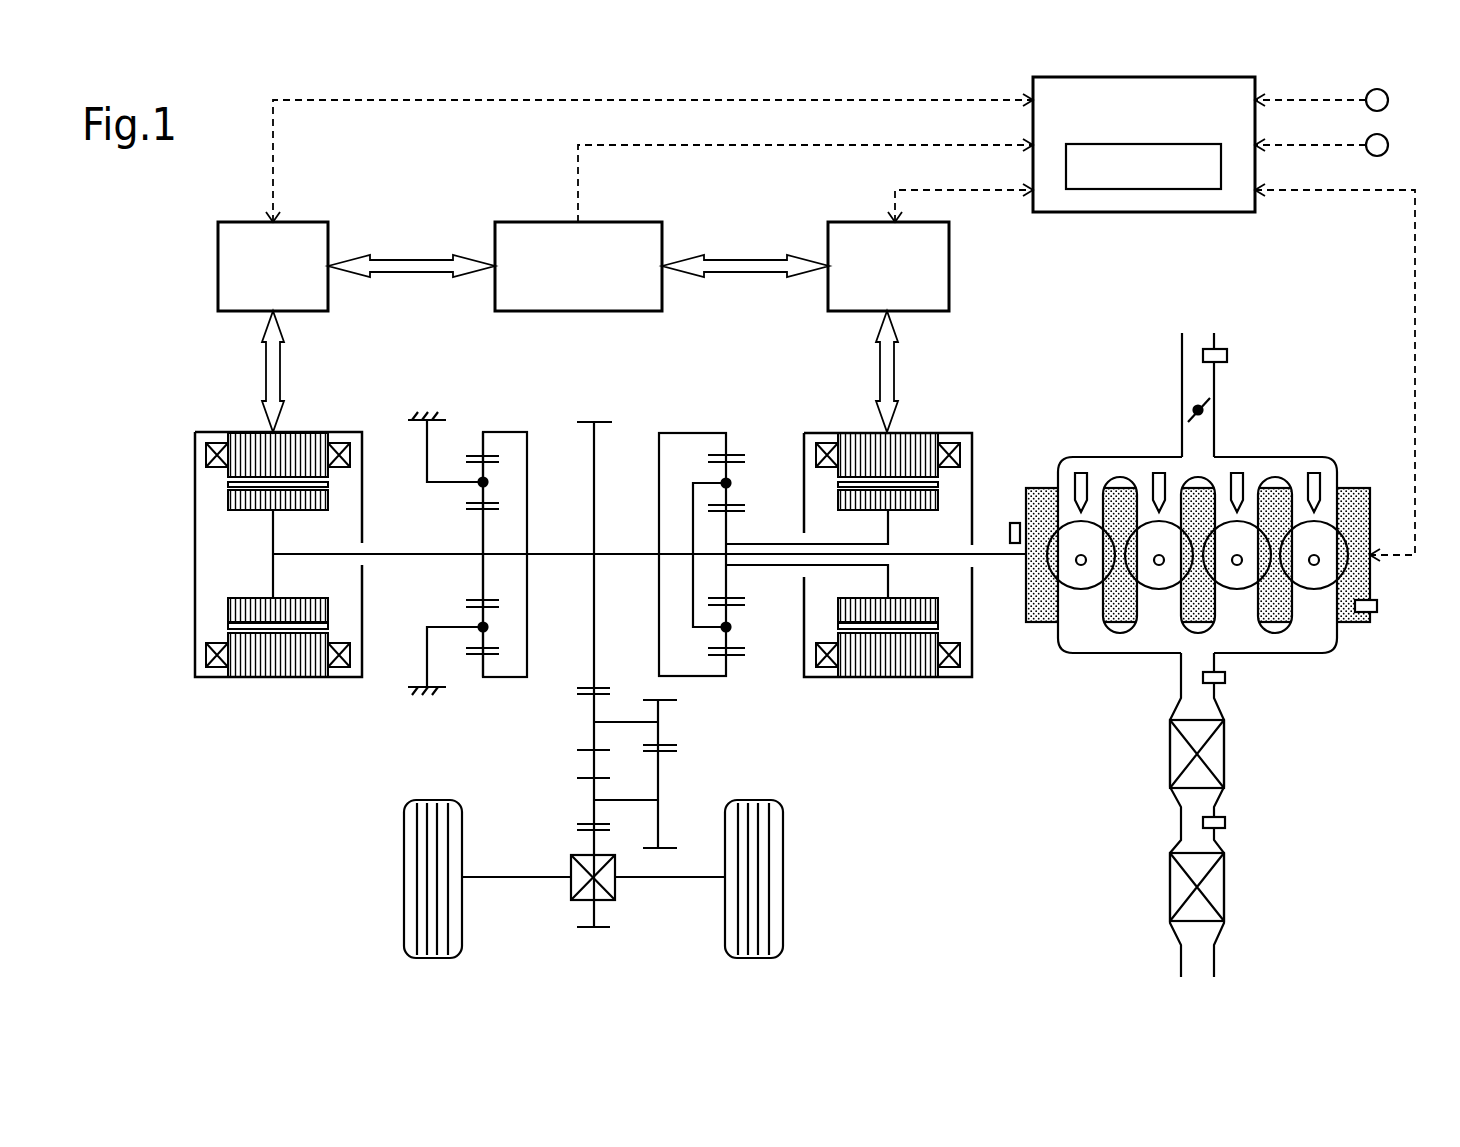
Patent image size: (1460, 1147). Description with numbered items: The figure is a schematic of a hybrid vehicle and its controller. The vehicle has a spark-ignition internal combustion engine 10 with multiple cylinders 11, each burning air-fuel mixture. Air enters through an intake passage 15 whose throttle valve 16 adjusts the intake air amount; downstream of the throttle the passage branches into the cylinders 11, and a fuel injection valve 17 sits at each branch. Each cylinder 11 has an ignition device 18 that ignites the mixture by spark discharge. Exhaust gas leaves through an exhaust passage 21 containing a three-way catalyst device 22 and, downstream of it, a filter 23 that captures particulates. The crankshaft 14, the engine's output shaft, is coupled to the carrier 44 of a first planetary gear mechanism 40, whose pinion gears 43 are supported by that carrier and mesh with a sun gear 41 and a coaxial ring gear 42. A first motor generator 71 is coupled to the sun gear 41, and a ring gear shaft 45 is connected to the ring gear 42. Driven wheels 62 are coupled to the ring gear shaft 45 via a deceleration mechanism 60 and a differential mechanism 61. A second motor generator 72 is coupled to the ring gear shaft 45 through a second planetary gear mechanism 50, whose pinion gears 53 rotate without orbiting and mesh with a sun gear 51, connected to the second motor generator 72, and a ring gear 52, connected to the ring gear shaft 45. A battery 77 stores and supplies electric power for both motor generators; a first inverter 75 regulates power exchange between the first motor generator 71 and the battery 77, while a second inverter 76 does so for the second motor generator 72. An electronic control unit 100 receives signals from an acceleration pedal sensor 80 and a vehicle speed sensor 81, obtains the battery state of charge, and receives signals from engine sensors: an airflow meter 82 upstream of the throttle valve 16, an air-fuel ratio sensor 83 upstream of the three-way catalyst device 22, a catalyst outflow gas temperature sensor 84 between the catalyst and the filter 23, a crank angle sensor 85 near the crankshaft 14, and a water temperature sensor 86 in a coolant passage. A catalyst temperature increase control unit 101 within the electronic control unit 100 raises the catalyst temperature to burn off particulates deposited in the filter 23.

The internal combustion engine 10 is at (1058, 415).
The cylinder 11 is at (1095, 549).
The crankshaft 14 is at (1000, 557).
The intake passage 15 is at (1182, 382).
The throttle valve 16 is at (1212, 406).
The fuel injection valve 17 is at (1157, 472).
The ignition device 18 is at (1081, 565).
The exhaust passage 21 is at (1180, 823).
The three-way catalyst device 22 is at (1213, 754).
The filter 23 is at (1213, 887).
The first planetary gear mechanism 40 is at (675, 401).
The sun gear 41 is at (729, 584).
The ring gear 42 is at (729, 441).
The pinion gears 43 is at (731, 487).
The carrier 44 is at (690, 570).
The ring gear shaft 45 is at (630, 554).
The second planetary gear mechanism 50 is at (526, 403).
The sun gear 51 is at (483, 585).
The ring gear 52 is at (483, 445).
The pinion gears 53 is at (474, 487).
The deceleration mechanism 60 is at (556, 747).
The differential mechanism 61 is at (571, 890).
The driven wheels 62 is at (404, 848).
The first motor generator 71 is at (822, 433).
The second motor generator 72 is at (213, 432).
The first inverter 75 is at (858, 222).
The second inverter 76 is at (233, 222).
The battery 77 is at (523, 222).
The acceleration pedal sensor 80 is at (1390, 100).
The vehicle speed sensor 81 is at (1390, 145).
The airflow meter 82 is at (1228, 355).
The air-fuel ratio sensor 83 is at (1226, 678).
The catalyst outflow gas temperature sensor 84 is at (1226, 823).
The crank angle sensor 85 is at (1014, 522).
The water temperature sensor 86 is at (1378, 606).
The electronic control unit 100 is at (1218, 212).
The catalyst temperature increase control unit 101 is at (1148, 189).